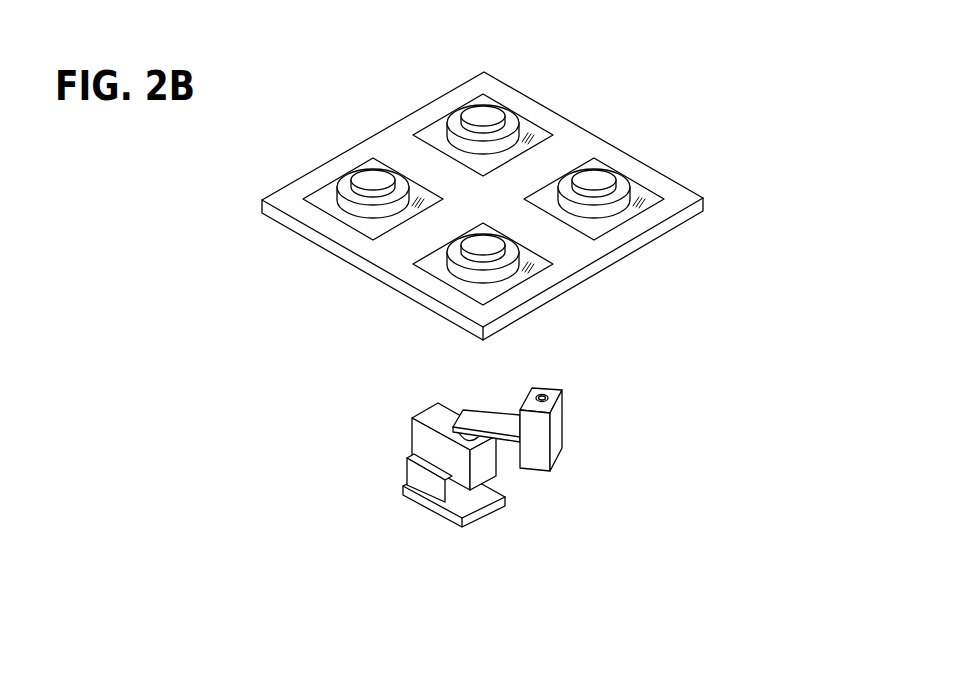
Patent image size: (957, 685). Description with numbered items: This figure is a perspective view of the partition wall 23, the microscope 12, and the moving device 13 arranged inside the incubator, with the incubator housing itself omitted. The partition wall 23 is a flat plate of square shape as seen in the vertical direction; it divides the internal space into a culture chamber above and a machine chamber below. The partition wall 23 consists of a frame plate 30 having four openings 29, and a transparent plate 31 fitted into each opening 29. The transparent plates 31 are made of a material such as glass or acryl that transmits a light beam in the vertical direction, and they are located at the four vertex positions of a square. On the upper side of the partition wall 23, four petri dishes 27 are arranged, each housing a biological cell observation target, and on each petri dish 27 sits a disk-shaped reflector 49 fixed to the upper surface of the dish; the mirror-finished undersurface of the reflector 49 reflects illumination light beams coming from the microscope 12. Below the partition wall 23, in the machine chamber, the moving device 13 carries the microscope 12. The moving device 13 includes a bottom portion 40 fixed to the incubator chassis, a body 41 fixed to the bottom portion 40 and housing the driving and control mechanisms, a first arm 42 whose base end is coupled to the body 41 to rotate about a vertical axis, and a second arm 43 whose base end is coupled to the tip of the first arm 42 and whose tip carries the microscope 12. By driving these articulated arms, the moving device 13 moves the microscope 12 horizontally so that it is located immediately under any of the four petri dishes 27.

The microscope 12 is at (556, 432).
The moving device 13 is at (485, 455).
The partition wall 23 is at (482, 206).
The petri dish 27 is at (455, 127).
The opening 29 is at (440, 147).
The frame plate 30 is at (277, 190).
The transparent plate 31 is at (538, 136).
The bottom portion 40 is at (473, 498).
The body 41 is at (423, 478).
The first arm 42 is at (447, 418).
The second arm 43 is at (497, 425).
The reflector 49 is at (473, 117).